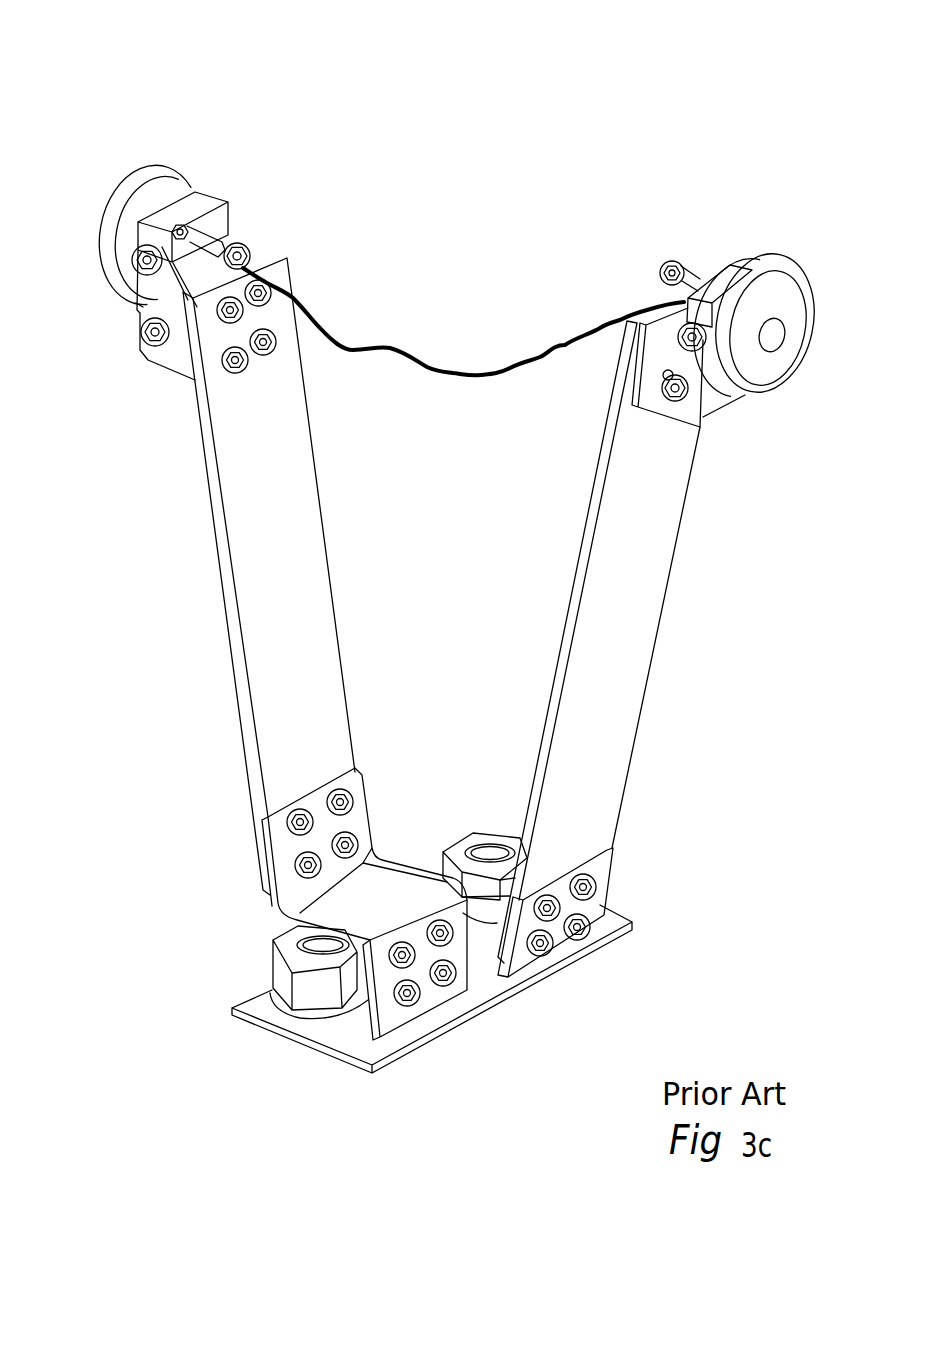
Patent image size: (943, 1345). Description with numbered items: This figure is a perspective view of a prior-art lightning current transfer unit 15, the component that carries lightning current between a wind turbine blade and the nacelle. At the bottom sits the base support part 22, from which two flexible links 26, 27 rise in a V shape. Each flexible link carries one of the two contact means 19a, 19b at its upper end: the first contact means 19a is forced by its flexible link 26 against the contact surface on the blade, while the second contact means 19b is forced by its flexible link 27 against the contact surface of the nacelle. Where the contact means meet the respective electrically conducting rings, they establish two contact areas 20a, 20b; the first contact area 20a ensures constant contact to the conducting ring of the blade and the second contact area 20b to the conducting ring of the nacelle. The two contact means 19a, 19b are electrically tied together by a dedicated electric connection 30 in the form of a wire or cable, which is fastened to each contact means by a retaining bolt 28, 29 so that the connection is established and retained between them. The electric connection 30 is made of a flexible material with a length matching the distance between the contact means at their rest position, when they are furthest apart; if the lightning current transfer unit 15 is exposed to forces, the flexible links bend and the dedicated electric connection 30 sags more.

The lightning current transfer unit 15 is at (176, 757).
The contact means 19a is at (334, 204).
The contact means 19b is at (629, 200).
The contact area 20a is at (126, 148).
The contact area 20b is at (758, 412).
The base support part 22 is at (214, 1059).
The flexible link 26 is at (255, 617).
The flexible link 27 is at (636, 630).
The retaining bolt 28 is at (252, 252).
The retaining bolt 29 is at (693, 263).
The dedicated electric connection 30 is at (434, 368).